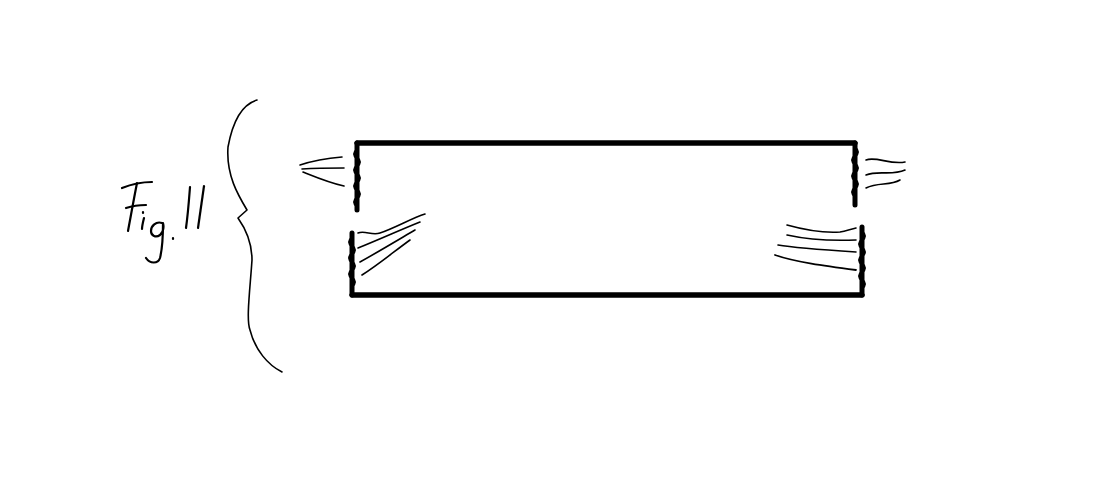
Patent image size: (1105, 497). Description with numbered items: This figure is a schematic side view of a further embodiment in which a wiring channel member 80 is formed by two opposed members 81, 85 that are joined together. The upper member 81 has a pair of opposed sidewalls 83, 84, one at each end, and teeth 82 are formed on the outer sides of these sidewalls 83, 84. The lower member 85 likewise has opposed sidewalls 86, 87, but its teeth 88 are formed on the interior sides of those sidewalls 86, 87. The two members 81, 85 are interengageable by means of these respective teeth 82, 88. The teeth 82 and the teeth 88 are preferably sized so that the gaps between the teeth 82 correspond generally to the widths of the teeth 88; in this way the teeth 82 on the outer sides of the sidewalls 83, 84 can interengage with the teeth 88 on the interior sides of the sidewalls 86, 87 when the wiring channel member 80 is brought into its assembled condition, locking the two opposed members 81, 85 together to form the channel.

The wiring channel member 80 is at (904, 135).
The member 81 is at (737, 141).
The teeth 82 is at (611, 169).
The sidewall 83 is at (358, 172).
The sidewall 84 is at (853, 178).
The member 85 is at (724, 295).
The sidewall 86 is at (351, 272).
The sidewall 87 is at (866, 255).
The teeth 88 is at (607, 242).